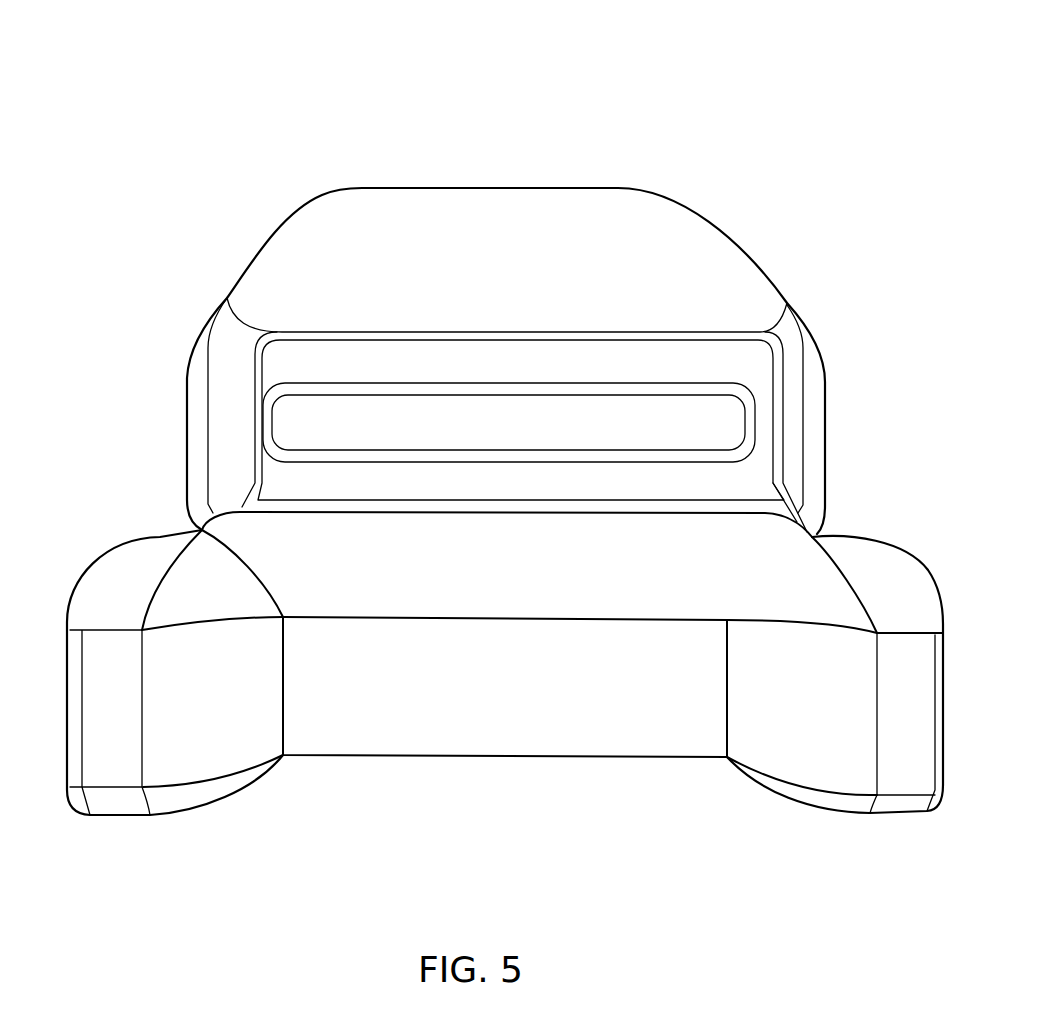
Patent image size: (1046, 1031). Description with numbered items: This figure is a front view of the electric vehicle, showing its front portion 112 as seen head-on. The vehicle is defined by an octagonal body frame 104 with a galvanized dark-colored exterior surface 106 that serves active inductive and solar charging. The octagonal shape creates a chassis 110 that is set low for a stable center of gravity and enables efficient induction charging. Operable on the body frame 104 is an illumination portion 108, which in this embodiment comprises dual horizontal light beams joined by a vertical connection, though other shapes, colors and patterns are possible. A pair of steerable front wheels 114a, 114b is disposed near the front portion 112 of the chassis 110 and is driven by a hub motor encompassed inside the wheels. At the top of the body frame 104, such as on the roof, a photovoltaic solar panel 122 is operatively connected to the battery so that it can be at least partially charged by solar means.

The body frame 104 is at (760, 288).
The exterior surface 106 is at (518, 489).
The illumination portion 108 is at (262, 418).
The chassis 110 is at (380, 730).
The front portion 112 is at (237, 63).
The steerable front wheel 114a is at (905, 732).
The steerable front wheel 114b is at (140, 778).
The photovoltaic solar panel 122 is at (732, 176).